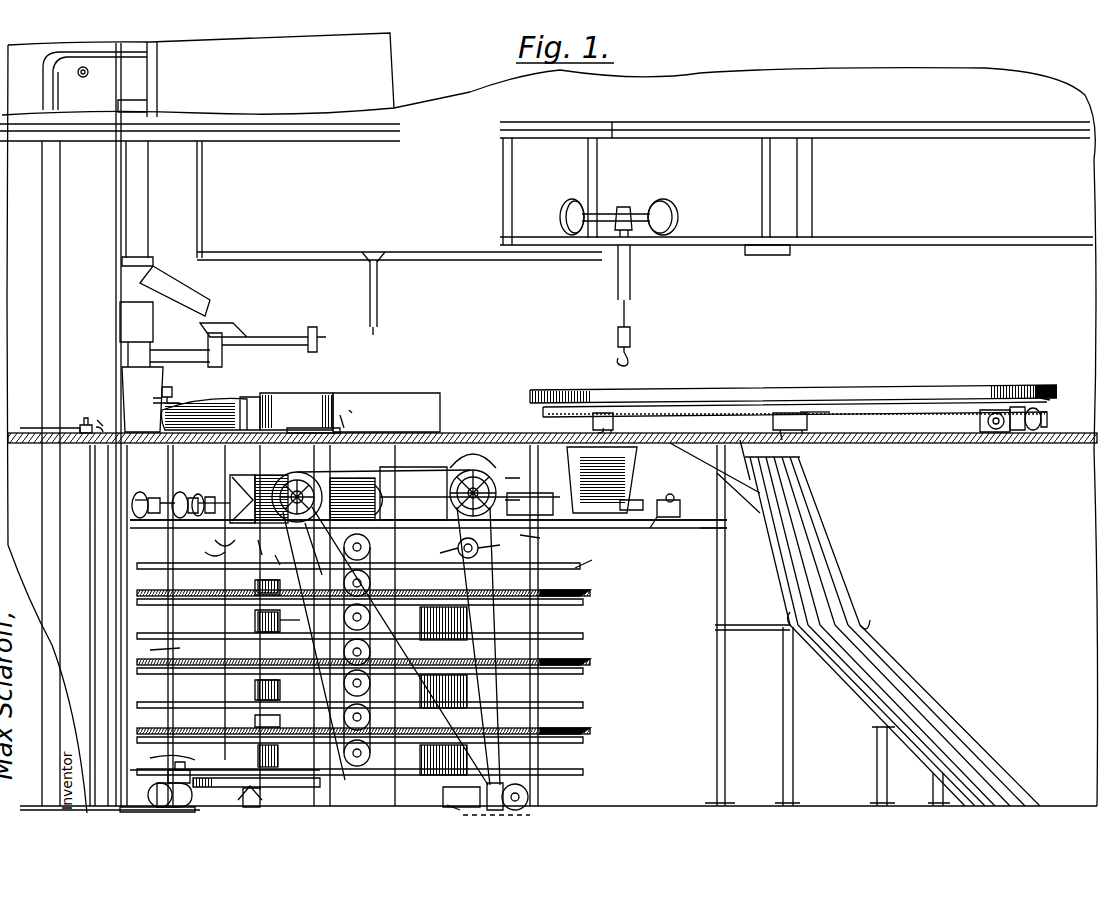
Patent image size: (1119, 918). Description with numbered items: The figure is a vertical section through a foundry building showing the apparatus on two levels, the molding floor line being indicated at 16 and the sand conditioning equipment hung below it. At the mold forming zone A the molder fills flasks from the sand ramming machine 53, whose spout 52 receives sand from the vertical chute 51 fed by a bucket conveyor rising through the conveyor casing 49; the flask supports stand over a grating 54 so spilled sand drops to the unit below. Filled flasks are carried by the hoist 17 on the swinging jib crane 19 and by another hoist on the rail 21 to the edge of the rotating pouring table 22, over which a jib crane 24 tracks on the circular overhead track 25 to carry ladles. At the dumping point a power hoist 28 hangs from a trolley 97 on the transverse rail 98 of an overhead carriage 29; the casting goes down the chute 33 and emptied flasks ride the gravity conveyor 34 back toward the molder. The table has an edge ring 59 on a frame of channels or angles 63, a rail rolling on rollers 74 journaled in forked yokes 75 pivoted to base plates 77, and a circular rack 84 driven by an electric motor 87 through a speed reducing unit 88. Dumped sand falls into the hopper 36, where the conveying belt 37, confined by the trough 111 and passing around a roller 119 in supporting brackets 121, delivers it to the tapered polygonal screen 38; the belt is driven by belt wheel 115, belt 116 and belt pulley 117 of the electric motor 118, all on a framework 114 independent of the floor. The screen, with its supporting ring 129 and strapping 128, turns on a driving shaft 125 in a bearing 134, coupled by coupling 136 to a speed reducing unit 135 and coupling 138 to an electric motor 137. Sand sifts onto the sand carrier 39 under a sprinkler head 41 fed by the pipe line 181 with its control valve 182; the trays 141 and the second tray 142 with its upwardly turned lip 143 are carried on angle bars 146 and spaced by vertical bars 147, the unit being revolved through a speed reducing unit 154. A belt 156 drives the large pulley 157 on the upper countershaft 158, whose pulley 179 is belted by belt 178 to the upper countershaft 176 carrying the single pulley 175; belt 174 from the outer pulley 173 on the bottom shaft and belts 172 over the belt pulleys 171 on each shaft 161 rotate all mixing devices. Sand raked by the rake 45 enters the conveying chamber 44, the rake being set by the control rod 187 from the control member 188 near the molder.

The upper floor line 16 is at (1078, 444).
The hoist 17 is at (297, 486).
The jib crane 19 is at (365, 268).
The rail 21 is at (400, 260).
The pouring table 22 is at (540, 390).
The jib crane 24 is at (773, 257).
The circular overhead track 25 is at (850, 242).
The power hoist 28 is at (613, 298).
The overhead carriage 29 is at (603, 212).
The chute 33 is at (845, 570).
The gravity conveyor 34 is at (245, 398).
The hopper 36 is at (625, 472).
The conveying belt 37 is at (638, 493).
The tapered polygonal screen 38 is at (214, 489).
The sand carrier 39 is at (575, 582).
The sprinkler head 41 is at (223, 555).
The conveying chamber 44 is at (135, 810).
The rake 45 is at (157, 786).
The conveyor casing 49 is at (55, 330).
The vertical chute 51 is at (145, 222).
The hopper or spout 52 is at (172, 296).
The sand ramming machine 53 is at (240, 336).
The grating 54 is at (345, 432).
The ring 59 is at (1058, 391).
The channels or angles 63 is at (1048, 402).
The rollers 74 is at (605, 414).
The forked yoke 75 is at (808, 412).
The base plate 77 is at (590, 427).
The circular rack 84 is at (672, 410).
The electric motor 87 is at (1033, 432).
The speed reducing unit 88 is at (1010, 434).
The trolley 97 is at (626, 208).
The transverse rail 98 is at (633, 210).
The trough 111 is at (410, 510).
The framework 114 is at (648, 530).
The belt wheel 115 is at (347, 480).
The belt 116 is at (458, 548).
The belt pulley 117 is at (428, 540).
The electric motor 118 is at (520, 537).
The roller 119 is at (684, 494).
The supporting brackets 121 is at (664, 524).
The axial driving shaft 125 is at (229, 543).
The outer strapping 128 is at (272, 544).
The supporting ring 129 is at (386, 400).
The bearing 134 is at (210, 499).
The speed reducing unit 135 is at (183, 492).
The coupling 136 is at (216, 475).
The electric motor 137 is at (138, 492).
The coupling 138 is at (153, 495).
The trays 141 is at (606, 772).
The second tray 142 is at (588, 603).
The upwardly turned lip 143 is at (592, 593).
The angle bars 146 is at (240, 650).
The vertically extending bars 147 is at (255, 578).
The speed reducing unit 154 is at (455, 810).
The belt 156 is at (492, 772).
The large pulley 157 is at (530, 804).
The upper countershaft 158 is at (520, 486).
The shaft 161 is at (322, 755).
The belt pulley 171 is at (343, 602).
The belts 172 is at (343, 680).
The outer pulley 173 is at (436, 760).
The belt 174 is at (267, 610).
The single pulley 175 is at (289, 553).
The upper countershaft 176 is at (275, 482).
The belt 178 is at (413, 484).
The pulley 179 is at (482, 486).
The pipe line 181 is at (36, 428).
The control valve 182 is at (87, 424).
The control rod 187 is at (184, 701).
The control member 188 is at (168, 387).
The mold forming zone A is at (350, 410).